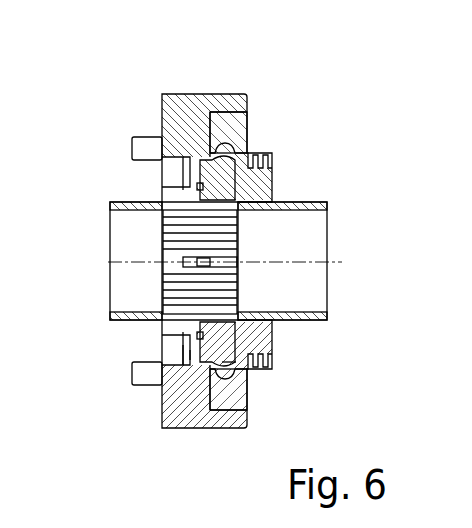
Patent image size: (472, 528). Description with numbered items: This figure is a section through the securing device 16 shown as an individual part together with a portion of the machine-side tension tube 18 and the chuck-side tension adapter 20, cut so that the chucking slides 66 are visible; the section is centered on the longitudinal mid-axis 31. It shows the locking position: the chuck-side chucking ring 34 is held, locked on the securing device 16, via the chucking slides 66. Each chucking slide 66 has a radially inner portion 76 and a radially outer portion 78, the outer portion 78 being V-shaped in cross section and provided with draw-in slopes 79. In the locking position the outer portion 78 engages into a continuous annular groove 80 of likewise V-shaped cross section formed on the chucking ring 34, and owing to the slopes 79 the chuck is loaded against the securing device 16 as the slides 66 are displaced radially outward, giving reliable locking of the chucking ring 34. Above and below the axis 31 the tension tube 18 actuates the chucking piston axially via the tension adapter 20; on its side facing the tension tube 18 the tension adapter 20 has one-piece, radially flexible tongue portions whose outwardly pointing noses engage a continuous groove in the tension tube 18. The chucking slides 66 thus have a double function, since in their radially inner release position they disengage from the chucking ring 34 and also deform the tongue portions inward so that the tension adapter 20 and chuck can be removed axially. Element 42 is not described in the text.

The securing device 16 is at (278, 89).
The tension tube 18 is at (121, 314).
The tension adapter 20 is at (290, 204).
The longitudinal mid-axis 31 is at (305, 258).
The chucking ring 34 is at (238, 130).
The lower housing cover 42 is at (177, 407).
The chucking slides 66 is at (210, 174).
The radially inner portion 76 is at (238, 217).
The radially outer portion 78 is at (223, 367).
The draw-in slopes 79 is at (193, 363).
The annular groove 80 is at (230, 371).